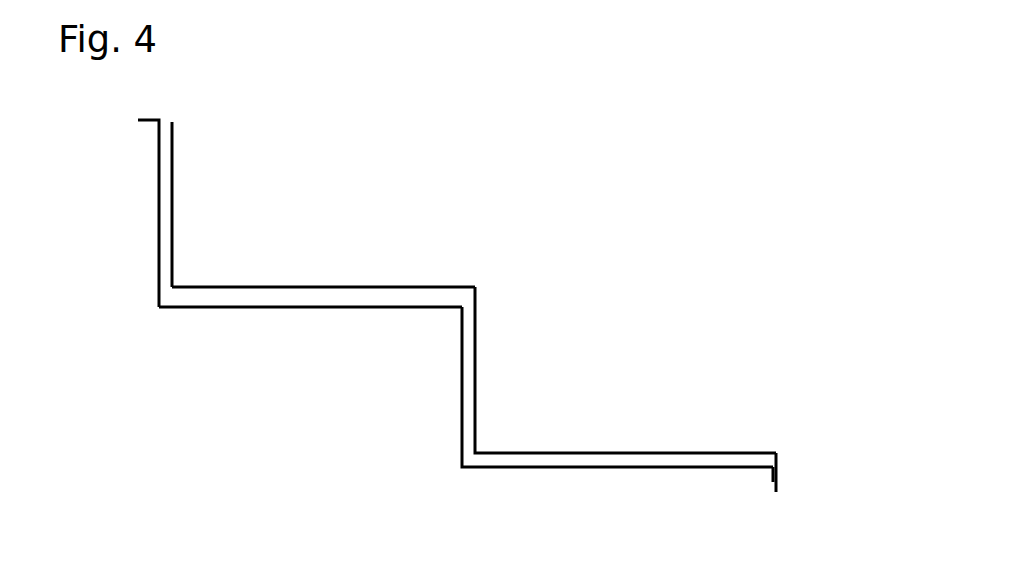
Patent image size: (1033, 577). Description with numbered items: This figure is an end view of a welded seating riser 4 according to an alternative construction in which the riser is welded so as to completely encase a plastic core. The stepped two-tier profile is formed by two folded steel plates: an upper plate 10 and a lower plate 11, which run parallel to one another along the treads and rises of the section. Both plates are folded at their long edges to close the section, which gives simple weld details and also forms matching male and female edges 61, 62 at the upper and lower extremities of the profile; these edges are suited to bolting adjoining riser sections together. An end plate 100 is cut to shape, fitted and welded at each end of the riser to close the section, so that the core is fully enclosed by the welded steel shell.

The riser 4 is at (549, 240).
The end plate 100 is at (418, 298).
The male edge 61 is at (158, 134).
The upper plate 10 is at (269, 285).
The lower plate 11 is at (262, 308).
The female edge 62 is at (781, 476).